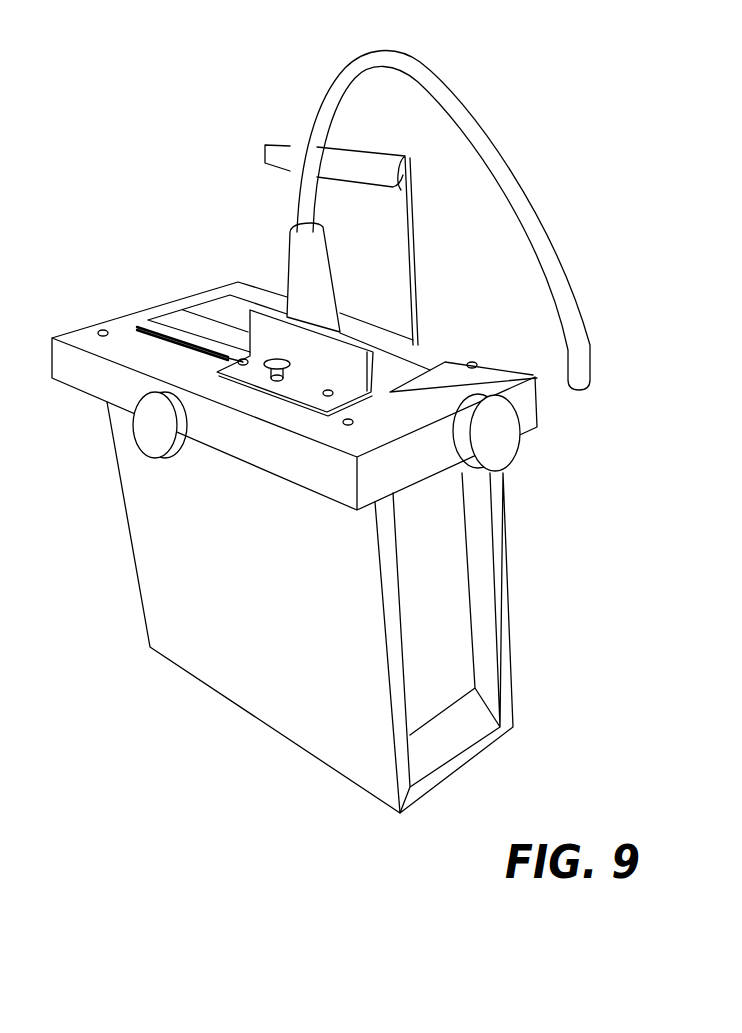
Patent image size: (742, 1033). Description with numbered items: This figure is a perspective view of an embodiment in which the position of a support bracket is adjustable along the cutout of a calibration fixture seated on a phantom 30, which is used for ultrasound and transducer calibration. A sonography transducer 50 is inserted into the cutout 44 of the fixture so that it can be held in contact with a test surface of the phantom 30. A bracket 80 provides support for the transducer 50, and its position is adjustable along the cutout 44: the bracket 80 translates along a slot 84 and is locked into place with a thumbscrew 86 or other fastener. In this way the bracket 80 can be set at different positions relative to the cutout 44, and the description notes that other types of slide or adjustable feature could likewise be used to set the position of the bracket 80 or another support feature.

The phantom 30 is at (507, 506).
The cutout 44 is at (537, 377).
The sonography transducer 50 is at (288, 250).
The bracket 80 is at (420, 242).
The slot 84 is at (147, 325).
The thumbscrew 86 is at (265, 373).